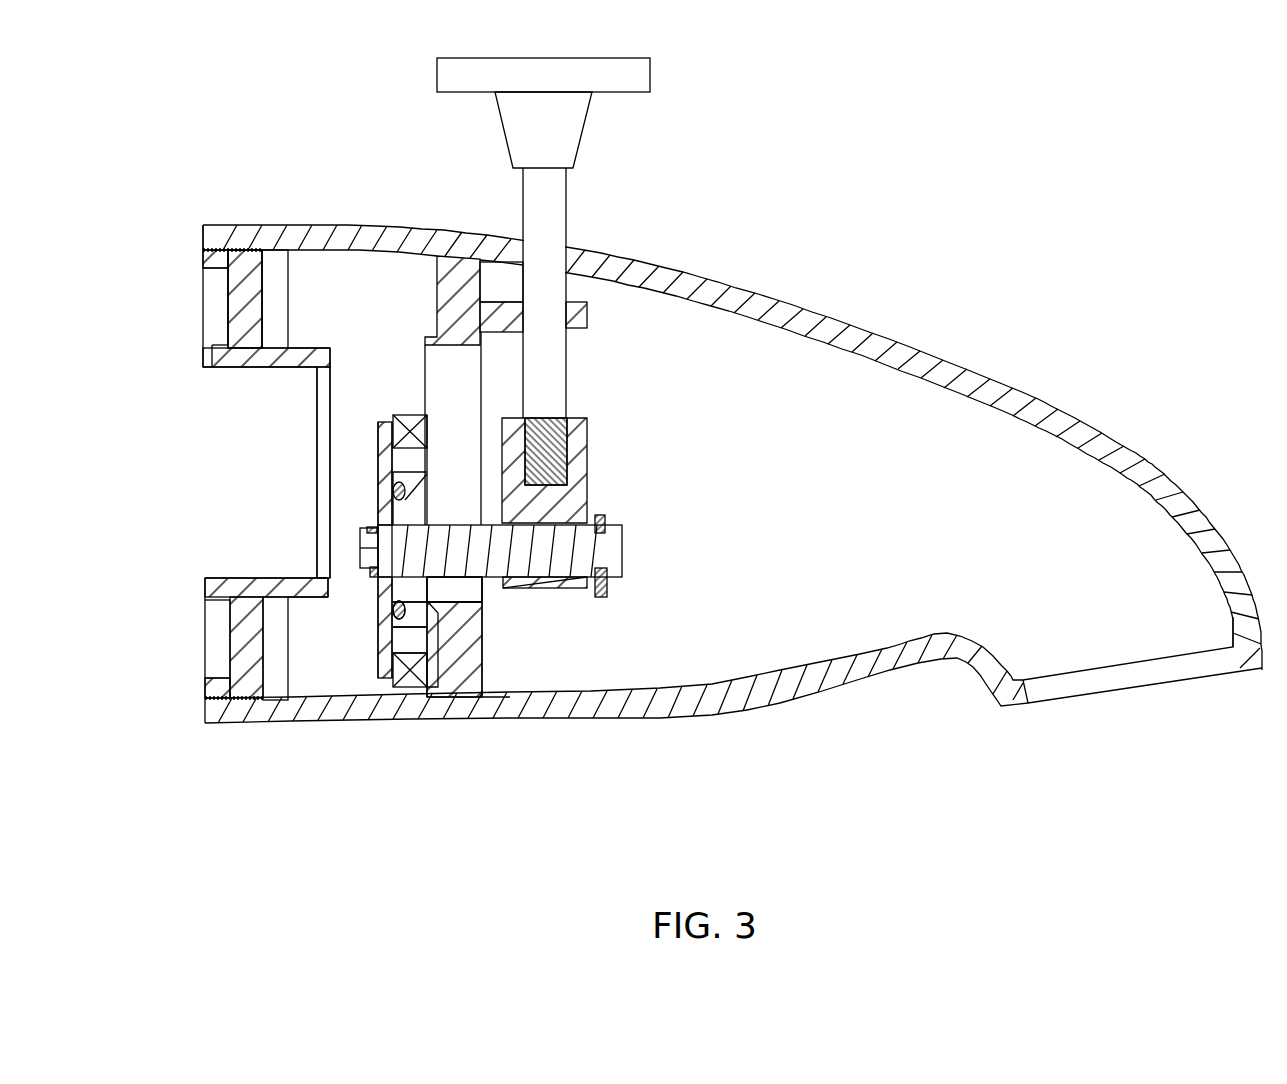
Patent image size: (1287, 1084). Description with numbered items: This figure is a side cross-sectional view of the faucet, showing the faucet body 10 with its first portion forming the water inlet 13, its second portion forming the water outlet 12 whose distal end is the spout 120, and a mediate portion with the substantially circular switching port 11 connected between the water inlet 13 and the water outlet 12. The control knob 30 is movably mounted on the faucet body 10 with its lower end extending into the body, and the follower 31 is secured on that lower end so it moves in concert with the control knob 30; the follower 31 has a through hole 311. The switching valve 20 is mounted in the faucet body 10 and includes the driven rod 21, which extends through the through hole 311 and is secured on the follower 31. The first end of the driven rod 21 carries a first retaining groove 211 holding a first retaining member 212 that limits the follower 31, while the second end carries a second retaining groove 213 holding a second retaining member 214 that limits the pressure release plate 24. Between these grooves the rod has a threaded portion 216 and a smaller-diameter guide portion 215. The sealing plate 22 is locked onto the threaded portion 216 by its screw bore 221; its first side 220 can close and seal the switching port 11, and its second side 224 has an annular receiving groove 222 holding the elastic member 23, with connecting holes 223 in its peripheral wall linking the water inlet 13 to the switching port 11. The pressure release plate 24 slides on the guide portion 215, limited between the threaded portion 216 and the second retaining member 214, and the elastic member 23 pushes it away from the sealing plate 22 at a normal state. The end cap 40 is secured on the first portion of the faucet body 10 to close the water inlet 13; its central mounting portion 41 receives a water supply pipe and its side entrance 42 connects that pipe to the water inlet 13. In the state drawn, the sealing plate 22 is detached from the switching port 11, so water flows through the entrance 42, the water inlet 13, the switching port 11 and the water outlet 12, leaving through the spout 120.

The faucet body 10 is at (727, 470).
The switching port 11 is at (437, 310).
The water outlet 12 is at (833, 315).
The water inlet 13 is at (363, 293).
The spout 120 is at (1128, 677).
The switching valve 20 is at (500, 627).
The driven rod 21 is at (615, 553).
The first retaining groove 211 is at (607, 520).
The first retaining member 212 is at (607, 588).
The second retaining groove 213 is at (368, 550).
The second retaining member 214 is at (373, 567).
The guide portion 215 is at (362, 540).
The threaded portion 216 is at (407, 577).
The first side 220 is at (425, 507).
The screw bore 221 is at (454, 589).
The sealing plate 22 is at (388, 418).
The receiving groove 222 is at (412, 635).
The connecting holes 223 is at (408, 645).
The second side 224 is at (393, 587).
The elastic member 23 is at (422, 602).
The pressure release plate 24 is at (304, 633).
The control knob 30 is at (567, 213).
The follower 31 is at (600, 602).
The through hole 311 is at (575, 588).
The end cap 40 is at (191, 474).
The mounting portion 41 is at (205, 348).
The entrance 42 is at (322, 458).